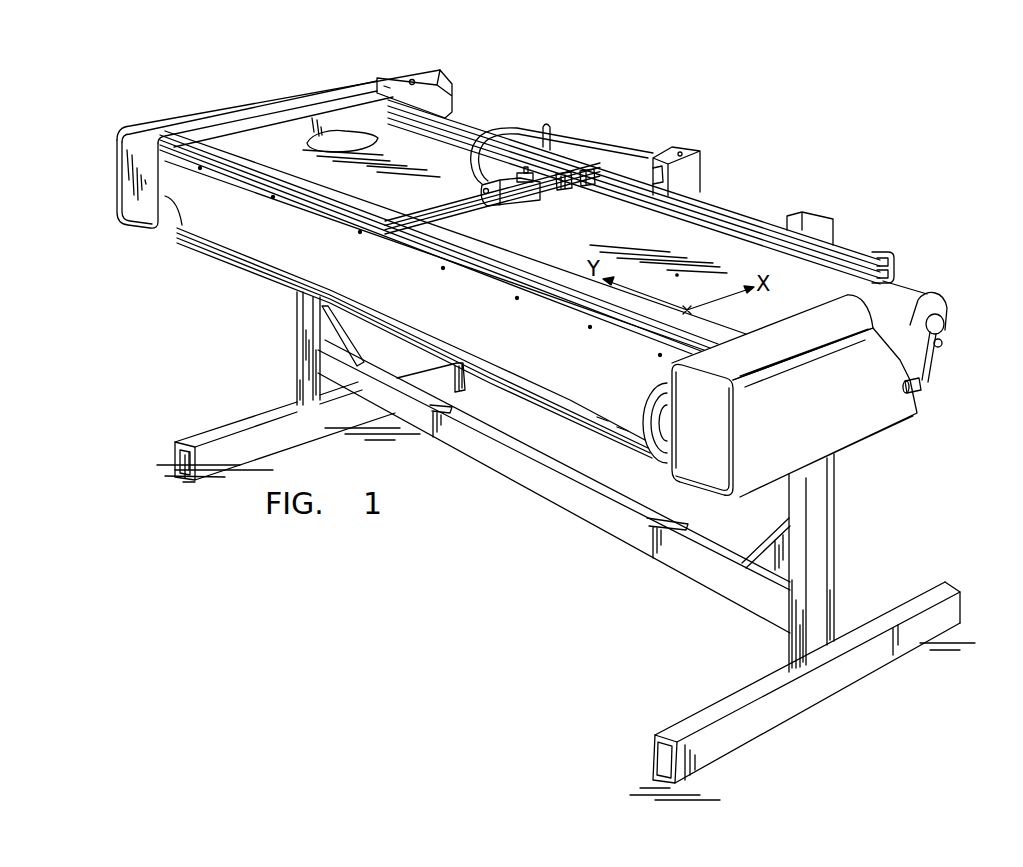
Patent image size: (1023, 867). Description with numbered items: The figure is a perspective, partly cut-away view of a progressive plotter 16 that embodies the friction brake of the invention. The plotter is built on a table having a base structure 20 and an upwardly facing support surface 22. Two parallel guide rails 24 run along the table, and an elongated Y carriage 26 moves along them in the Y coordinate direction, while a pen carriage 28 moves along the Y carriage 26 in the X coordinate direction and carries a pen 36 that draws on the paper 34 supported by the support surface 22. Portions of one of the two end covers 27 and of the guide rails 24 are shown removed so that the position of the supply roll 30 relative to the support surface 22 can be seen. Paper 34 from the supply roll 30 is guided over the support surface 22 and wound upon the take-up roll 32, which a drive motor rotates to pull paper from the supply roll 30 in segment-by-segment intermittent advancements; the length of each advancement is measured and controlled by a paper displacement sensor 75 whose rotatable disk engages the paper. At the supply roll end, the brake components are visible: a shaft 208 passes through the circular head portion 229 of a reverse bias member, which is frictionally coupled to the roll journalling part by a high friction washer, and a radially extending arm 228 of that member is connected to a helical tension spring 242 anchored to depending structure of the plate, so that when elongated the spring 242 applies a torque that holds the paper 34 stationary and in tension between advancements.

The progressive plotter 16 is at (758, 199).
The base structure 20 is at (826, 480).
The support surface 22 is at (352, 138).
The guide rail 24 is at (327, 200).
The Y carriage 26 is at (430, 219).
The end cover 27 is at (128, 184).
The pen carriage 28 is at (522, 204).
The supply roll 30 is at (930, 300).
The take-up roll 32 is at (270, 253).
The paper 34 is at (288, 150).
The pen 36 is at (532, 202).
The paper displacement sensor 75 is at (820, 219).
The shaft 208 is at (946, 342).
The arm 228 is at (930, 360).
The circular head portion 229 is at (945, 324).
The spring 242 is at (916, 388).